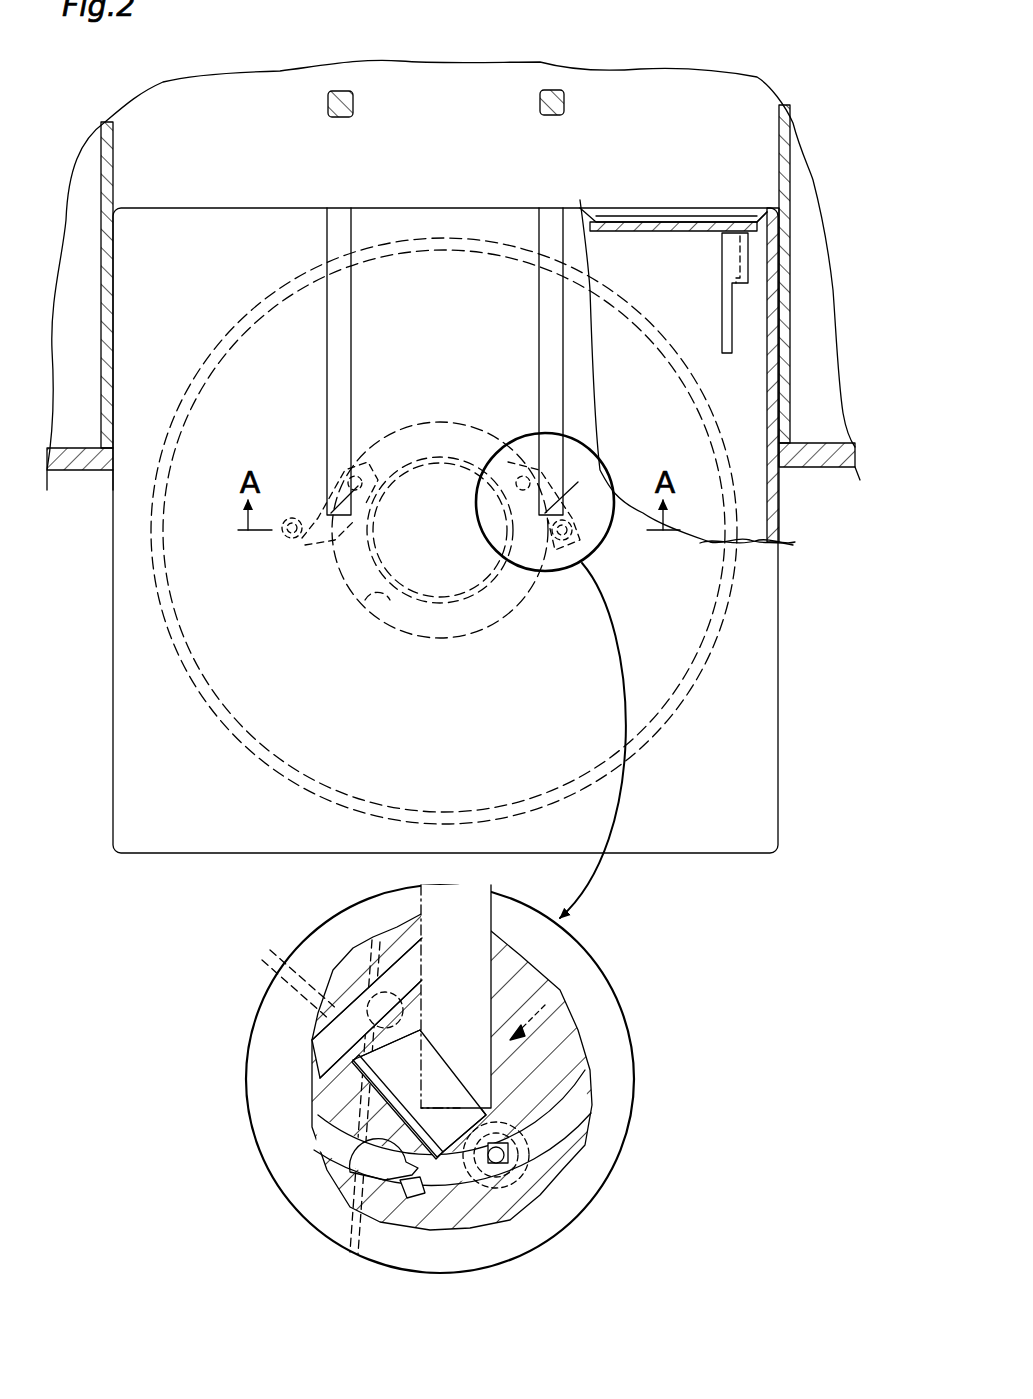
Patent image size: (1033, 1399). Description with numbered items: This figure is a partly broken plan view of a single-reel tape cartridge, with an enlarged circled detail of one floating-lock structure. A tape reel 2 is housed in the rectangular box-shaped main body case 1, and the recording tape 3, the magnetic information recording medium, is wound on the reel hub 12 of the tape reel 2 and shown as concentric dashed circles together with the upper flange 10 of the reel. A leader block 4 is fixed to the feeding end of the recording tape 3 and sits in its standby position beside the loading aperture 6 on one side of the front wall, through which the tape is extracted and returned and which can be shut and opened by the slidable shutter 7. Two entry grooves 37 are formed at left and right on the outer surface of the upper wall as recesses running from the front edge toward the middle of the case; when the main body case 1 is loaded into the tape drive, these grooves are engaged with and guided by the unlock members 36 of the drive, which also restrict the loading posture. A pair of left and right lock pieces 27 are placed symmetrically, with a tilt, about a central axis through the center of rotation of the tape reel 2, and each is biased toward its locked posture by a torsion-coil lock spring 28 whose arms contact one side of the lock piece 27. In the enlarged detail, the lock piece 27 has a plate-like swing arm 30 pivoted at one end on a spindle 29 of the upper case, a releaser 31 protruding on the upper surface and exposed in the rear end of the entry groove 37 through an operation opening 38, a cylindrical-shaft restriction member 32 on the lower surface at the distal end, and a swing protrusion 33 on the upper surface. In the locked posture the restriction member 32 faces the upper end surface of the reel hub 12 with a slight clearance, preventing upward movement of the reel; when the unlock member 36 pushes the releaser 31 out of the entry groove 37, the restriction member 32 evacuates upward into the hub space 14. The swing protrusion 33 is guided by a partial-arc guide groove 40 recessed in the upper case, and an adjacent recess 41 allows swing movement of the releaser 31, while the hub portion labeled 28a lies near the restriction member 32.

The main body case 1 is at (217, 204).
The tape reel 2 is at (268, 293).
The recording tape 3 is at (186, 405).
The leader block 4 is at (720, 246).
The loading aperture 6 is at (735, 208).
The shutter 7 is at (680, 222).
The upper flange 10 is at (237, 683).
The reel hub 12 is at (380, 606).
The hub space 14 is at (446, 622).
The lock piece 27 is at (322, 500).
The lock spring 28 is at (432, 455).
The hub flange 28a is at (300, 1112).
The spindle 29 is at (362, 965).
The swing arm 30 is at (565, 1082).
The releaser 31 is at (340, 505).
The restriction member 32 is at (528, 1170).
The swing protrusion 33 is at (500, 1162).
The unlock member 36 is at (326, 99).
The entry groove 37 is at (342, 216).
The operation opening 38 is at (450, 1088).
The guide groove 40 is at (410, 1228).
The recess 41 is at (350, 1166).